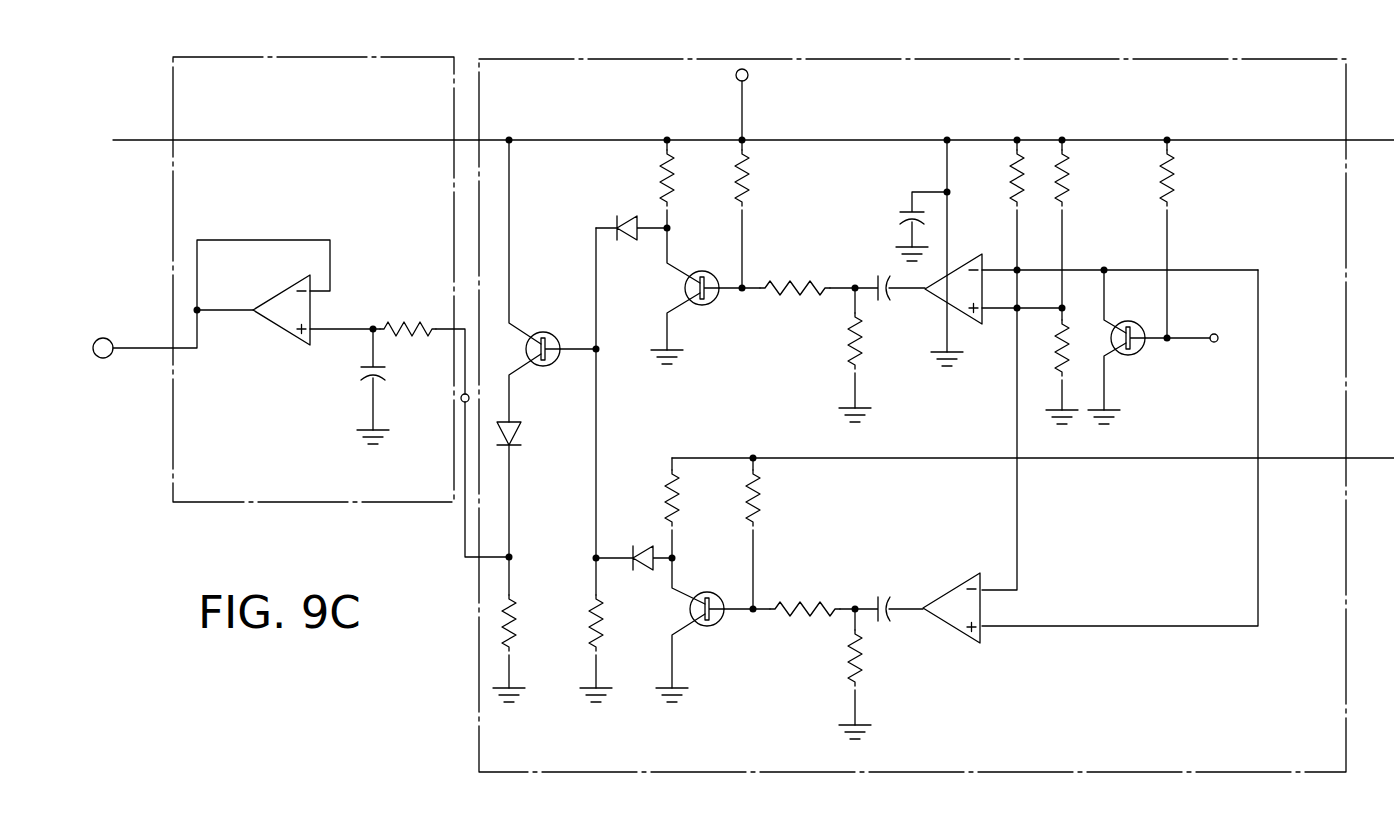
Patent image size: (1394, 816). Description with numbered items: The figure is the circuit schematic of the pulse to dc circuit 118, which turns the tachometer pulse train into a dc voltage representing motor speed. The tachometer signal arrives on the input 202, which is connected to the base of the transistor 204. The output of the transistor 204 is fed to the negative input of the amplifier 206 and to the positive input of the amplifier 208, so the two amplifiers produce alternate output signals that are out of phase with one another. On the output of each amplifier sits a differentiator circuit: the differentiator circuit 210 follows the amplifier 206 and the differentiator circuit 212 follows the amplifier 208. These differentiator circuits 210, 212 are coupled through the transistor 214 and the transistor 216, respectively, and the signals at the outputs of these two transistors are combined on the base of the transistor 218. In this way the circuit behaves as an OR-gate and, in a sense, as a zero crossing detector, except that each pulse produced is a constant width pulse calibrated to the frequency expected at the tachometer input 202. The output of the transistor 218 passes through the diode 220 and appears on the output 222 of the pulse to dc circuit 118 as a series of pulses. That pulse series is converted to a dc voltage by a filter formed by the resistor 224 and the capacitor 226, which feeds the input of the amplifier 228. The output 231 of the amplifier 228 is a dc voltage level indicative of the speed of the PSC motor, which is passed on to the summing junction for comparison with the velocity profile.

The pulse to dc circuit 118 is at (600, 59).
The input 202 is at (1216, 344).
The transistor 204 is at (1138, 322).
The amplifier 206 is at (933, 302).
The amplifier 208 is at (958, 594).
The differentiator circuit 210 is at (869, 278).
The differentiator circuit 212 is at (867, 601).
The transistor 214 is at (698, 272).
The transistor 216 is at (712, 593).
The transistor 218 is at (546, 331).
The diode 220 is at (522, 434).
The output 222 is at (462, 403).
The resistor 224 is at (423, 320).
The capacitor 226 is at (383, 379).
The amplifier 228 is at (279, 292).
The output 231 is at (116, 323).